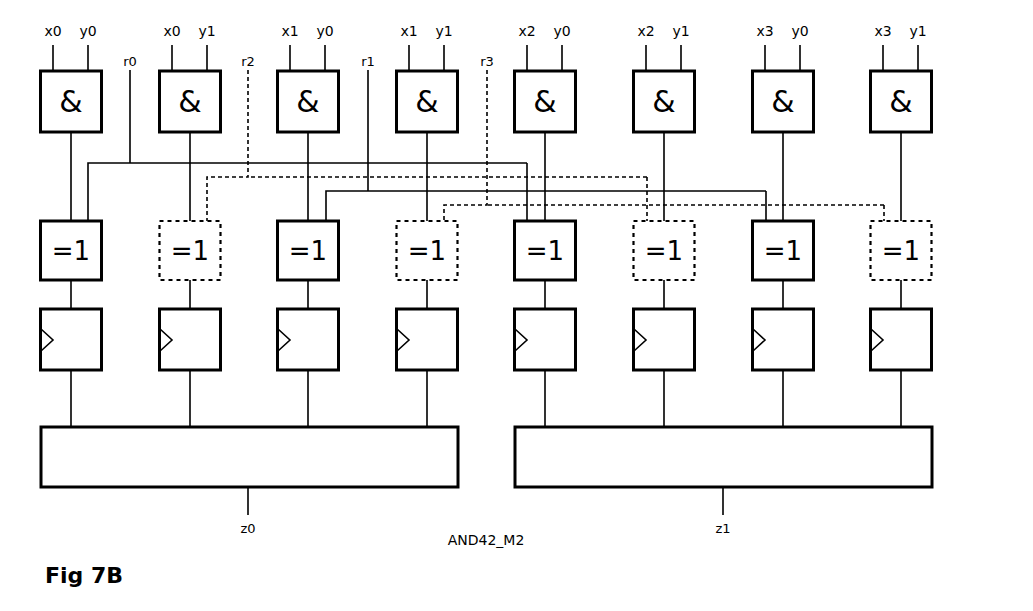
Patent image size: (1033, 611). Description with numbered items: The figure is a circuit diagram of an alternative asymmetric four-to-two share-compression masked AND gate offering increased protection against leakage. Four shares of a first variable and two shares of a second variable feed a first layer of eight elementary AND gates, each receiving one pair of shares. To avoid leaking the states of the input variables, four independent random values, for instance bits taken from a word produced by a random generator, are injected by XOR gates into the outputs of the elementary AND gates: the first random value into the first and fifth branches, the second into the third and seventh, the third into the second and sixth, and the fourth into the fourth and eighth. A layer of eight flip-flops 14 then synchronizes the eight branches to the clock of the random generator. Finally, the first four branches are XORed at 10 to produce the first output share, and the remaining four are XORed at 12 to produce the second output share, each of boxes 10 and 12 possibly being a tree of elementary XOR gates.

The XOR tree 10 is at (63, 463).
The XOR tree 12 is at (538, 463).
The flip-flops 14 is at (925, 363).